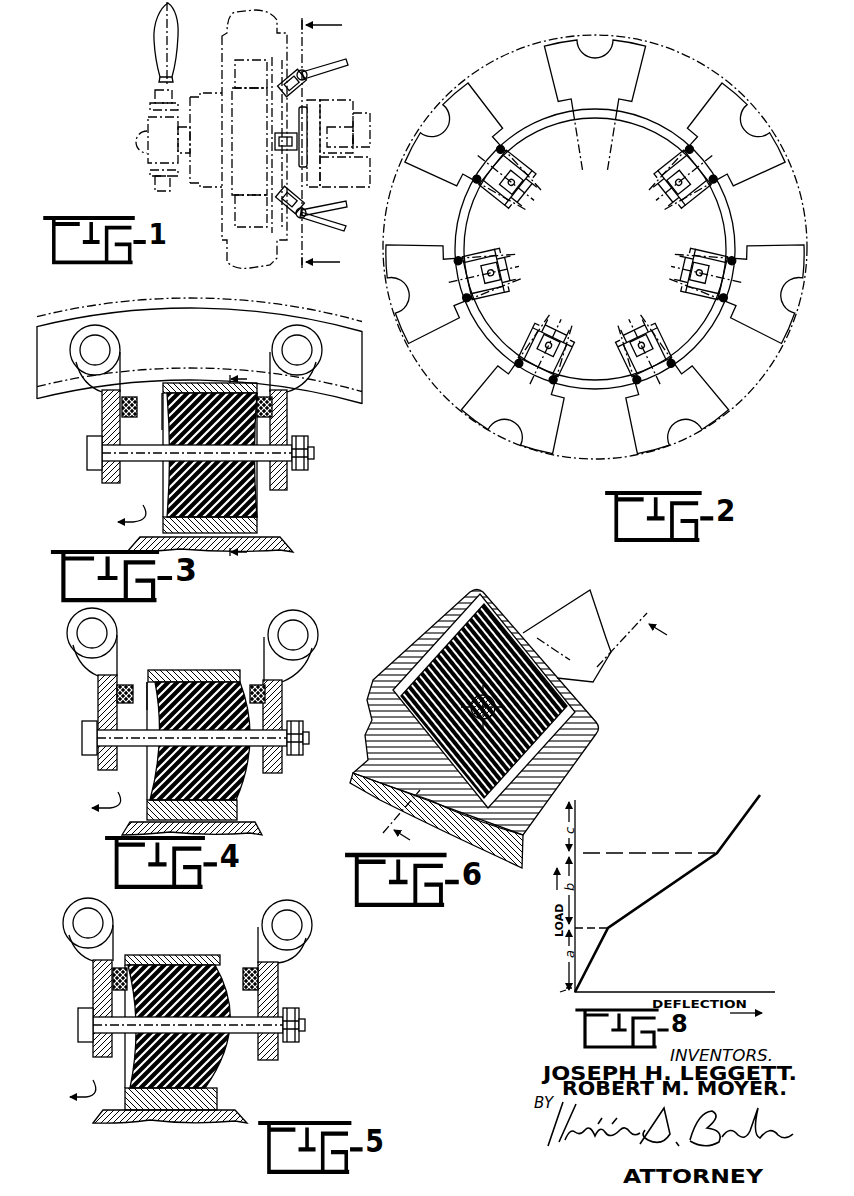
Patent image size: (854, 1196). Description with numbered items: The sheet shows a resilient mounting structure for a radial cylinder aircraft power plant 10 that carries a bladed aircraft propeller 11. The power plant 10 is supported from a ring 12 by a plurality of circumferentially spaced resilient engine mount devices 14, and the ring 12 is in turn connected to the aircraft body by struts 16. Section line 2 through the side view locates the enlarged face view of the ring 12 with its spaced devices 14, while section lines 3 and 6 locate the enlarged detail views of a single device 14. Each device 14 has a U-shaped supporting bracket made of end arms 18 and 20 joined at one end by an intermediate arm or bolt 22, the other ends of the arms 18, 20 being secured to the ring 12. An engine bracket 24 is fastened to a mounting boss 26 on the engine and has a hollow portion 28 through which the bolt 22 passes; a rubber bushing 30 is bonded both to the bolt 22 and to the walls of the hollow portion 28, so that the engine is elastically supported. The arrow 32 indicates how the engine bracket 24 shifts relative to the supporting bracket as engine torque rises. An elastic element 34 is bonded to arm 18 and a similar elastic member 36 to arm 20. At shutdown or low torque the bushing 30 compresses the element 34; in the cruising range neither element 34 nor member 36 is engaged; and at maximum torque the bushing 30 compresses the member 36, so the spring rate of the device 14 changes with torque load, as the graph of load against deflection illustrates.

In FIG. 1, the aircraft power plant 10 is at (204, 78).
In FIG. 2, the aircraft power plant 10 is at (719, 58).
In FIG. 1, the bladed aircraft propeller 11 is at (157, 31).
In FIG. 1, the ring 12 is at (307, 75).
In FIG. 2, the ring 12 is at (553, 118).
In FIG. 3, the ring 12 is at (353, 333).
In FIG. 1, the resilient engine mount device 14 is at (273, 140).
In FIG. 3, the resilient engine mount device 14 is at (193, 438).
In FIG. 4, the resilient engine mount device 14 is at (190, 721).
In FIG. 5, the resilient engine mount device 14 is at (184, 1010).
In FIG. 6, the resilient engine mount device 14 is at (475, 729).
In FIG. 1, the strut 16 is at (347, 62).
In FIG. 2, the end arm 18 is at (585, 265).
In FIG. 3, the end arm 18 is at (287, 410).
In FIG. 4, the end arm 18 is at (282, 690).
In FIG. 5, the end arm 18 is at (278, 977).
In FIG. 2, the end arm 20 is at (520, 160).
In FIG. 3, the end arm 20 is at (102, 412).
In FIG. 4, the end arm 20 is at (98, 697).
In FIG. 5, the end arm 20 is at (93, 980).
In FIG. 6, the end arm 20 is at (556, 610).
In FIG. 3, the intermediate arm or bolt 22 is at (151, 465).
In FIG. 4, the intermediate arm or bolt 22 is at (136, 752).
In FIG. 5, the intermediate arm or bolt 22 is at (240, 1045).
In FIG. 6, the intermediate arm or bolt 22 is at (483, 705).
In FIG. 2, the engine bracket 24 is at (595, 265).
In FIG. 3, the engine bracket 24 is at (192, 443).
In FIG. 4, the engine bracket 24 is at (186, 734).
In FIG. 5, the engine bracket 24 is at (159, 1021).
In FIG. 6, the engine bracket 24 is at (476, 713).
In FIG. 1, the mounting boss 26 is at (274, 84).
In FIG. 3, the mounting boss 26 is at (272, 537).
In FIG. 4, the mounting boss 26 is at (250, 822).
In FIG. 5, the mounting boss 26 is at (240, 1112).
In FIG. 6, the mounting boss 26 is at (363, 768).
In FIG. 3, the hollow portion 28 is at (161, 394).
In FIG. 4, the hollow portion 28 is at (146, 682).
In FIG. 3, the rubber bushing 30 is at (168, 438).
In FIG. 4, the rubber bushing 30 is at (162, 713).
In FIG. 5, the rubber bushing 30 is at (135, 1058).
In FIG. 6, the rubber bushing 30 is at (406, 651).
In FIG. 3, the arrow 32 is at (124, 510).
In FIG. 4, the arrow 32 is at (106, 795).
In FIG. 5, the arrow 32 is at (78, 1085).
In FIG. 3, the elastic element 34 is at (264, 397).
In FIG. 4, the elastic element 34 is at (258, 685).
In FIG. 5, the elastic element 34 is at (250, 968).
In FIG. 3, the elastic member 36 is at (130, 397).
In FIG. 4, the elastic member 36 is at (125, 685).
In FIG. 5, the elastic member 36 is at (118, 968).
In FIG. 1, the line 2— 2 is at (322, 145).
In FIG. 1, the line 3— 3 is at (299, 64).
In FIG. 6, the line 3— 3 is at (519, 719).
In FIG. 3, the line 6— 6 is at (238, 466).